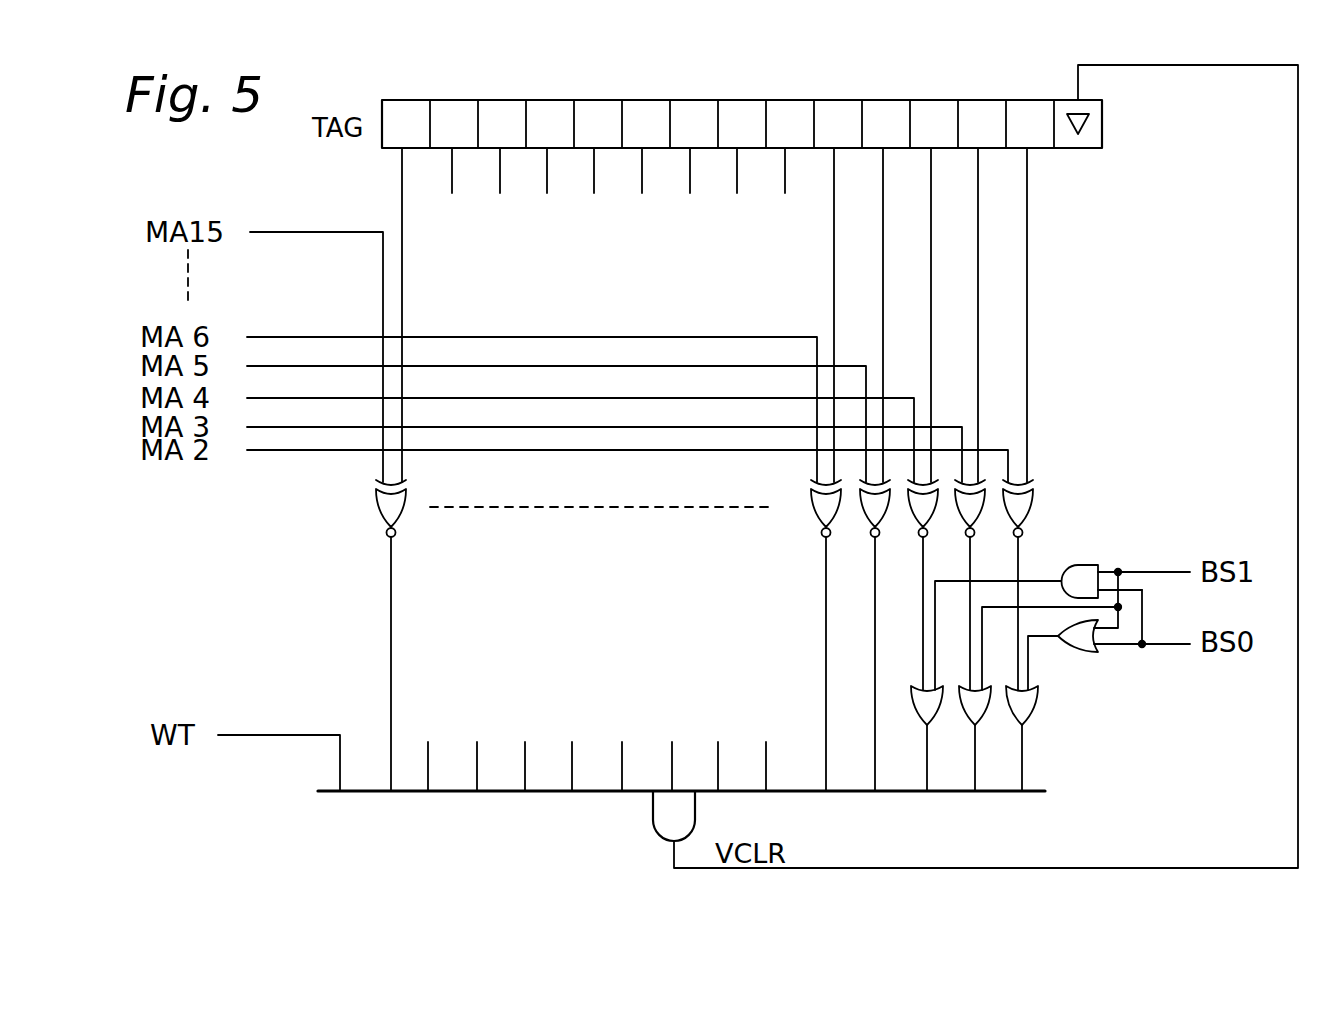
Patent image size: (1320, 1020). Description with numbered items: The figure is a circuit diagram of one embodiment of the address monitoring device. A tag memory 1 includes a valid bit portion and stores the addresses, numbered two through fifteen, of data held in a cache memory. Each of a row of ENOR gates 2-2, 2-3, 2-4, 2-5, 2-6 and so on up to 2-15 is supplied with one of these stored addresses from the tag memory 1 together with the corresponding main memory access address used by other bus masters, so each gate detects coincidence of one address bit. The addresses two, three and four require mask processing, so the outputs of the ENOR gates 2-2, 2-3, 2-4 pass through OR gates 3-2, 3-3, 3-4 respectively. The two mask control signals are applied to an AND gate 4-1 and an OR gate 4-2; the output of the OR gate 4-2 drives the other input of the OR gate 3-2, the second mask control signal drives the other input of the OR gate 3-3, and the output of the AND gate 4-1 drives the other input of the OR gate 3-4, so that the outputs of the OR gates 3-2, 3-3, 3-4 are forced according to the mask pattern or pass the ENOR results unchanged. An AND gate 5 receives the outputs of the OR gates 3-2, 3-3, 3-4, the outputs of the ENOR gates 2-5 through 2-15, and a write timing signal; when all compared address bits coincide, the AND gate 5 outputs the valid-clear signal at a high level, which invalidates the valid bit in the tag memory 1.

The tag memory 1 is at (1103, 124).
The ENOR gate 2-15 is at (398, 522).
The ENOR gate 2-6 is at (810, 515).
The ENOR gate 2-5 is at (862, 520).
The ENOR gate 2-4 is at (908, 520).
The ENOR gate 2-3 is at (982, 520).
The ENOR gate 2-2 is at (1034, 504).
The OR gate 3-2 is at (1036, 710).
The OR gate 3-3 is at (985, 712).
The OR gate 3-4 is at (934, 720).
The AND gate 4-1 is at (1098, 565).
The OR gate 4-2 is at (1080, 652).
The AND gate 5 is at (653, 820).